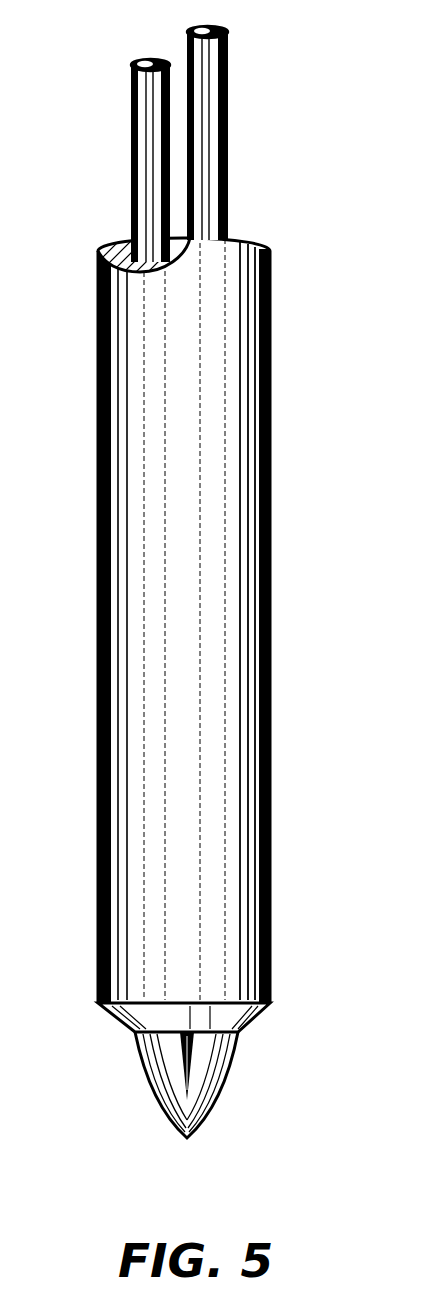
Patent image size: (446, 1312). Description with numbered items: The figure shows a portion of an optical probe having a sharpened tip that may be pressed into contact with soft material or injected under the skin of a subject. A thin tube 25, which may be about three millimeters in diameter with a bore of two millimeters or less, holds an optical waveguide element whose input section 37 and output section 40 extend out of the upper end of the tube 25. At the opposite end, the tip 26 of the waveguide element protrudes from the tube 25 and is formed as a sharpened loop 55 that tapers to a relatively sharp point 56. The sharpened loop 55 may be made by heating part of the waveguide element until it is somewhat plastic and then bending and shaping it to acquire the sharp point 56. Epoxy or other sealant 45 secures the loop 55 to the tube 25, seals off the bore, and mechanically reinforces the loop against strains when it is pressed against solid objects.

The tube 25 is at (100, 505).
The tip 26 is at (220, 1094).
The input section 37 is at (228, 98).
The output section 40 is at (132, 160).
The epoxy or other sealant 45 is at (258, 1018).
The sharpened loop 55 is at (148, 1092).
The sharp point 56 is at (185, 1140).